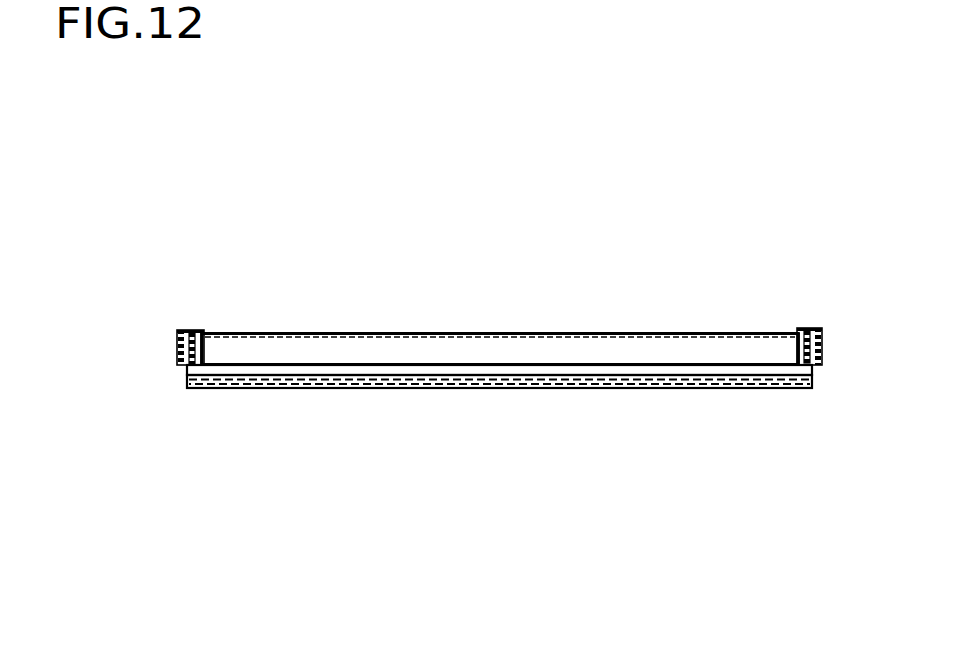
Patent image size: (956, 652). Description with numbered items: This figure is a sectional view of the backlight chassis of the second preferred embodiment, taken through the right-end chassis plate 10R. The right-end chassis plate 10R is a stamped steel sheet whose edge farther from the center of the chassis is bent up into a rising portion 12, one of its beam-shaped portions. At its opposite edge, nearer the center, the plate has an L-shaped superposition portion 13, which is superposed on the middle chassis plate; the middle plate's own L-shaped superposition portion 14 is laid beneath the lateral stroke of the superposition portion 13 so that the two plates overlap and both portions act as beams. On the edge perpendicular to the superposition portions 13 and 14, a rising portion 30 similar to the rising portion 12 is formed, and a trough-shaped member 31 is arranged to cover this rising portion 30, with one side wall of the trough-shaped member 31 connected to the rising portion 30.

The rising portion 12 is at (497, 348).
The right-end chassis plate 10R is at (341, 365).
The superposition portion 13 is at (672, 372).
The superposition portion 14 is at (697, 390).
The rising portion 30 is at (177, 345).
The trough-shaped member 31 is at (183, 329).